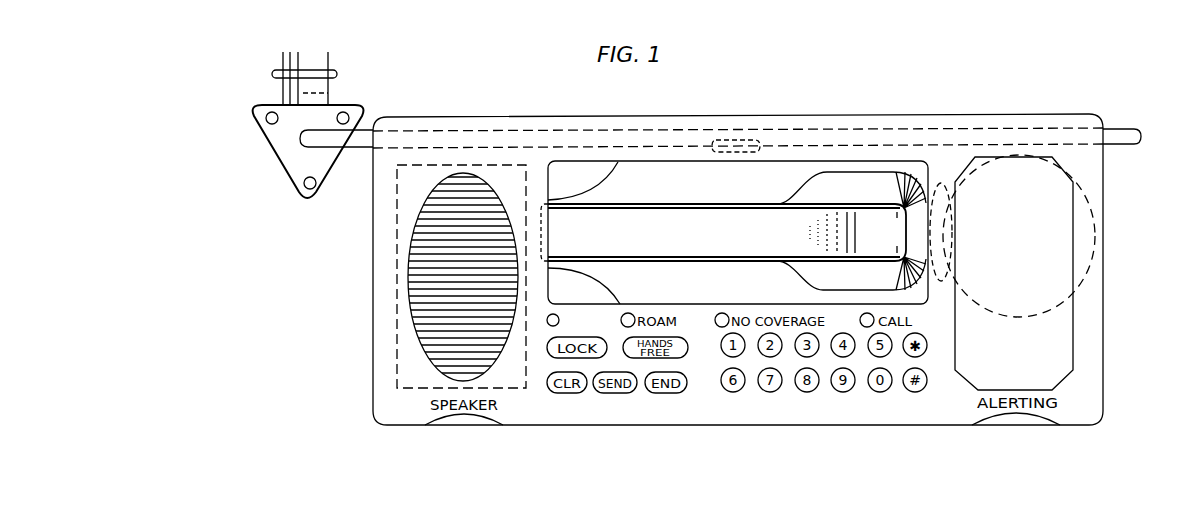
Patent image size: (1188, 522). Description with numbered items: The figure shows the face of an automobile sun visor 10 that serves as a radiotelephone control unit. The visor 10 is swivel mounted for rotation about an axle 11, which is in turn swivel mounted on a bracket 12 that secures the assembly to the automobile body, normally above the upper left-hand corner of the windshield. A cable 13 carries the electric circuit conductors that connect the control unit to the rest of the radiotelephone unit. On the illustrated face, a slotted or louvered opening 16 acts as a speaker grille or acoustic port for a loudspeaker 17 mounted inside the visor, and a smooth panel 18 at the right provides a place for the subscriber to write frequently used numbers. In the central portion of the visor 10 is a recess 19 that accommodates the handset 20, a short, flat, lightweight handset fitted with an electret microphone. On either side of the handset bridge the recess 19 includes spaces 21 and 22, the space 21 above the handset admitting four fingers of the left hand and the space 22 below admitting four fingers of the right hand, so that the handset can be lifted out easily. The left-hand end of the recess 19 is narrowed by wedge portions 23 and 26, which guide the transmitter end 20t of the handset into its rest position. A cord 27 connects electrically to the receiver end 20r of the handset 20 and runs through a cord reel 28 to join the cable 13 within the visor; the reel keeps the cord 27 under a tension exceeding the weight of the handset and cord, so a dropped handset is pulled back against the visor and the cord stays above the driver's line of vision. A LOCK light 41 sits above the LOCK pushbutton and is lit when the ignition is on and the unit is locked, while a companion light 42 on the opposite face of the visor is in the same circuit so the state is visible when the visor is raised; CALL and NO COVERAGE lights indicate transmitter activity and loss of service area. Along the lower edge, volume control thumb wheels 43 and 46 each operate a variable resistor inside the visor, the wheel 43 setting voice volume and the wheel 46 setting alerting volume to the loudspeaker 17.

The visor 10 is at (373, 268).
The axle 11 is at (357, 148).
The bracket 12 is at (283, 148).
The cable 13 is at (272, 74).
The slotted or louvered opening 16 is at (417, 305).
The loudspeaker 17 is at (523, 164).
The smooth panel 18 is at (1067, 340).
The recess 19 is at (772, 160).
The handset 20 is at (723, 232).
The transmitter end 20t is at (561, 232).
The receiver end 20r is at (853, 232).
The space 21 is at (685, 180).
The space 22 is at (714, 293).
The wedge portion 23 is at (599, 187).
The wedge portion 26 is at (601, 296).
The cord 27 is at (945, 230).
The cord reel 28 is at (1090, 202).
The LOCK light 41 is at (559, 320).
The companion light 42 is at (745, 140).
The volume control thumb wheel 43 is at (458, 422).
The volume control thumb wheel 46 is at (1012, 422).